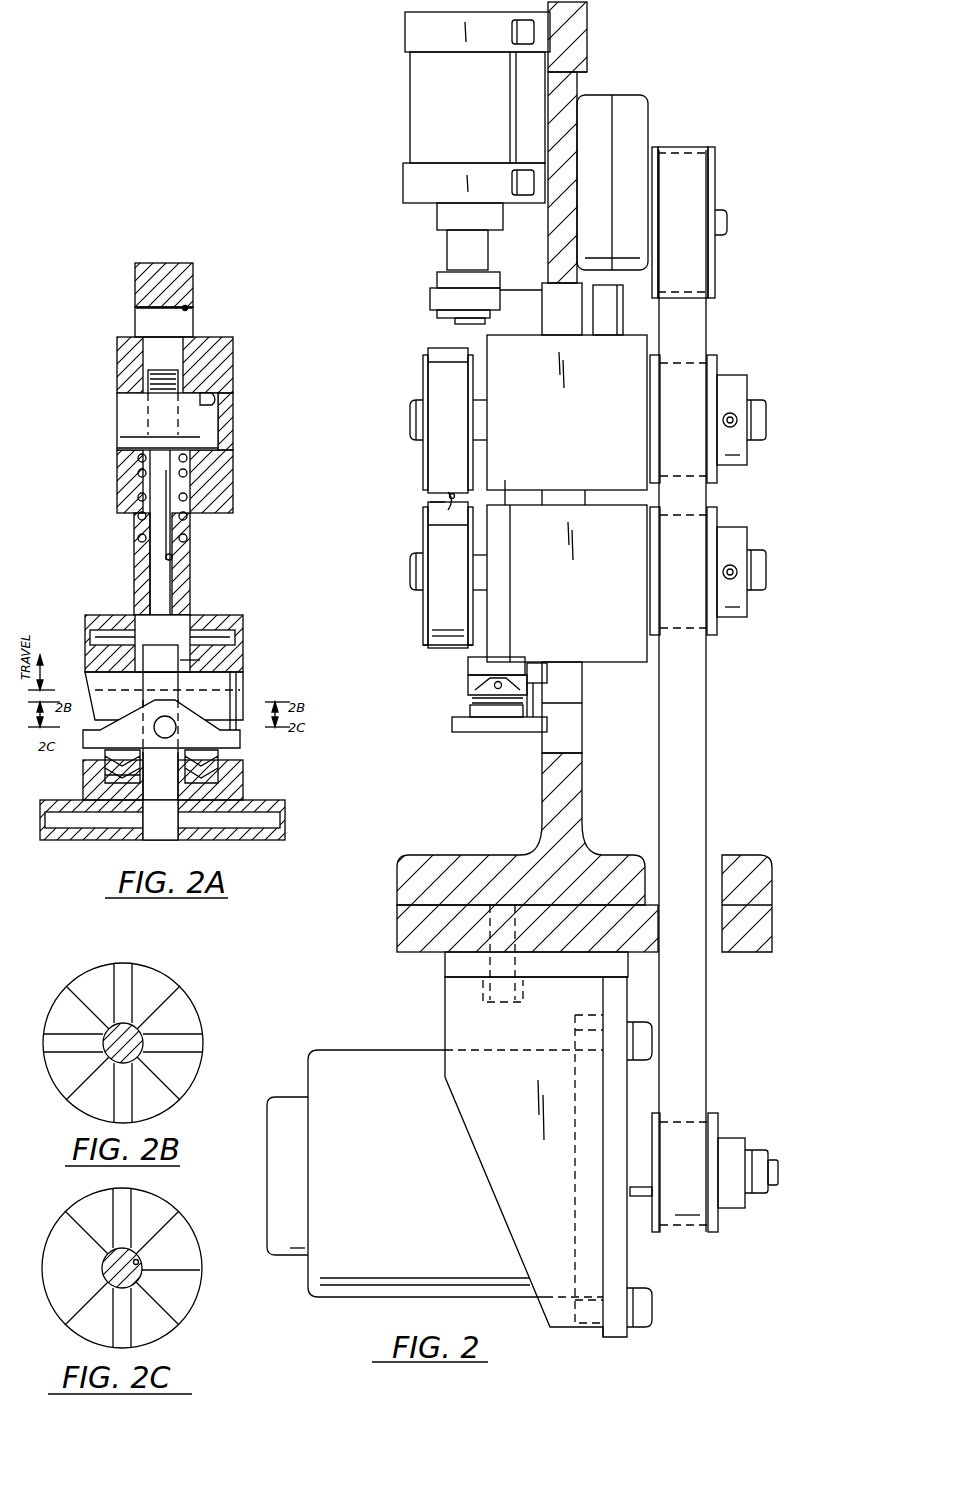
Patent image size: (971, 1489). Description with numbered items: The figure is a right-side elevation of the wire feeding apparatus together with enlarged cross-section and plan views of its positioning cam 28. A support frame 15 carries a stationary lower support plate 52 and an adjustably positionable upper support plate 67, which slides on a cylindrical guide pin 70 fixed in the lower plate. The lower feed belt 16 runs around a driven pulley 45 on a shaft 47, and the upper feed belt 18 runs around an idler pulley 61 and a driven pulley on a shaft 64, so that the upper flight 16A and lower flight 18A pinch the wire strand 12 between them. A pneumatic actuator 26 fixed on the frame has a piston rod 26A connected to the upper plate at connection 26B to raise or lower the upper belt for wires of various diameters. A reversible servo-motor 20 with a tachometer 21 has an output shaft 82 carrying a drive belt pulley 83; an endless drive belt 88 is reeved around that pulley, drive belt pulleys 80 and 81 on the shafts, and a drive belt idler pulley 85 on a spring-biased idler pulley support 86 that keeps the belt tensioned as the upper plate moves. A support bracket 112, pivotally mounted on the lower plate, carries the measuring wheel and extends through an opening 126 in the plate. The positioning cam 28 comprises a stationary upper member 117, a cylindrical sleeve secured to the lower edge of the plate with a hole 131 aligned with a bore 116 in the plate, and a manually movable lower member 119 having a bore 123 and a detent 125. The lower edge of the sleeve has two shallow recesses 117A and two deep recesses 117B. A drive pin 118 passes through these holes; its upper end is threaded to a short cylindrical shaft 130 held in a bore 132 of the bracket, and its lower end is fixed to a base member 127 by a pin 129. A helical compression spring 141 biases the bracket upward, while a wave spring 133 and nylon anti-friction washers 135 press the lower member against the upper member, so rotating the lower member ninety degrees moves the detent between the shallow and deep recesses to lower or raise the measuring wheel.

In FIG. 2, the wire strand 12 is at (430, 543).
In FIG. 2, the support frame 15 is at (542, 795).
In FIG. 2, the lower feed belt 16 is at (440, 523).
In FIG. 2, the upper flight of lower feed belt 16A is at (452, 495).
In FIG. 2, the upper feed belt 18 is at (445, 350).
In FIG. 2, the lower flight of upper feed belt 18A is at (440, 503).
In FIG. 2, the reversible electric servo-motor 20 is at (385, 1175).
In FIG. 2, the tachometer 21 is at (300, 1186).
In FIG. 2, the pneumatic actuator 26 is at (423, 98).
In FIG. 2, the piston rod 26A is at (447, 248).
In FIG. 2, the piston rod connection 26B is at (437, 300).
In FIG. 2, the positioning cam 28 is at (450, 690).
In FIG. 2A, the positioning cam 28 is at (198, 582).
In FIG. 2, the driven pulley 45 is at (423, 633).
In FIG. 2, the shaft 47 is at (410, 576).
In FIG. 2, the lower support plate 52 is at (622, 590).
In FIG. 2A, the lower support plate 52 is at (195, 285).
In FIG. 2, the idler pulley 61 is at (423, 362).
In FIG. 2, the shaft 64 is at (410, 420).
In FIG. 2, the upper support plate 67 is at (625, 437).
In FIG. 2, the cylindrical guide pin 70 is at (622, 318).
In FIG. 2, the drive belt pulley 80 is at (718, 635).
In FIG. 2, the drive belt pulley 81 is at (718, 360).
In FIG. 2, the output shaft 82 is at (648, 1198).
In FIG. 2, the drive belt pulley 83 is at (718, 1120).
In FIG. 2, the drive belt idler pulley 85 is at (718, 190).
In FIG. 2, the idler pulley support 86 is at (645, 108).
In FIG. 2, the drive belt 88 is at (708, 818).
In FIG. 2, the support bracket 112 is at (497, 513).
In FIG. 2A, the support bracket 112 is at (220, 346).
In FIG. 2A, the bore 116 is at (172, 556).
In FIG. 2, the stationary upper member 117 is at (468, 665).
In FIG. 2A, the stationary upper member 117 is at (243, 650).
In FIG. 2B, the stationary upper member 117 is at (190, 997).
In FIG. 2B, the shallow recess 117A is at (125, 975).
In FIG. 2B, the deep recess 117B is at (70, 1035).
In FIG. 2A, the drive pin 118 is at (150, 590).
In FIG. 2B, the drive pin 118 is at (135, 1050).
In FIG. 2C, the drive pin 118 is at (200, 1270).
In FIG. 2, the movable lower member 119 is at (465, 694).
In FIG. 2A, the movable lower member 119 is at (243, 740).
In FIG. 2C, the movable lower member 119 is at (188, 1214).
In FIG. 2A, the bore 123 is at (105, 760).
In FIG. 2C, the bore 123 is at (138, 1262).
In FIG. 2A, the detent 125 is at (160, 712).
In FIG. 2C, the detent 125 is at (125, 1200).
In FIG. 2A, the opening 126 is at (188, 308).
In FIG. 2, the base member 127 is at (512, 734).
In FIG. 2A, the base member 127 is at (243, 790).
In FIG. 2A, the pin 129 is at (245, 826).
In FIG. 2A, the short cylindrical shaft 130 is at (218, 424).
In FIG. 2A, the hole 131 is at (235, 667).
In FIG. 2A, the bore 132 is at (218, 402).
In FIG. 2A, the wave spring 133 is at (105, 783).
In FIG. 2A, the nylon anti-friction washers 135 is at (218, 765).
In FIG. 2A, the helical compression spring 141 is at (138, 520).